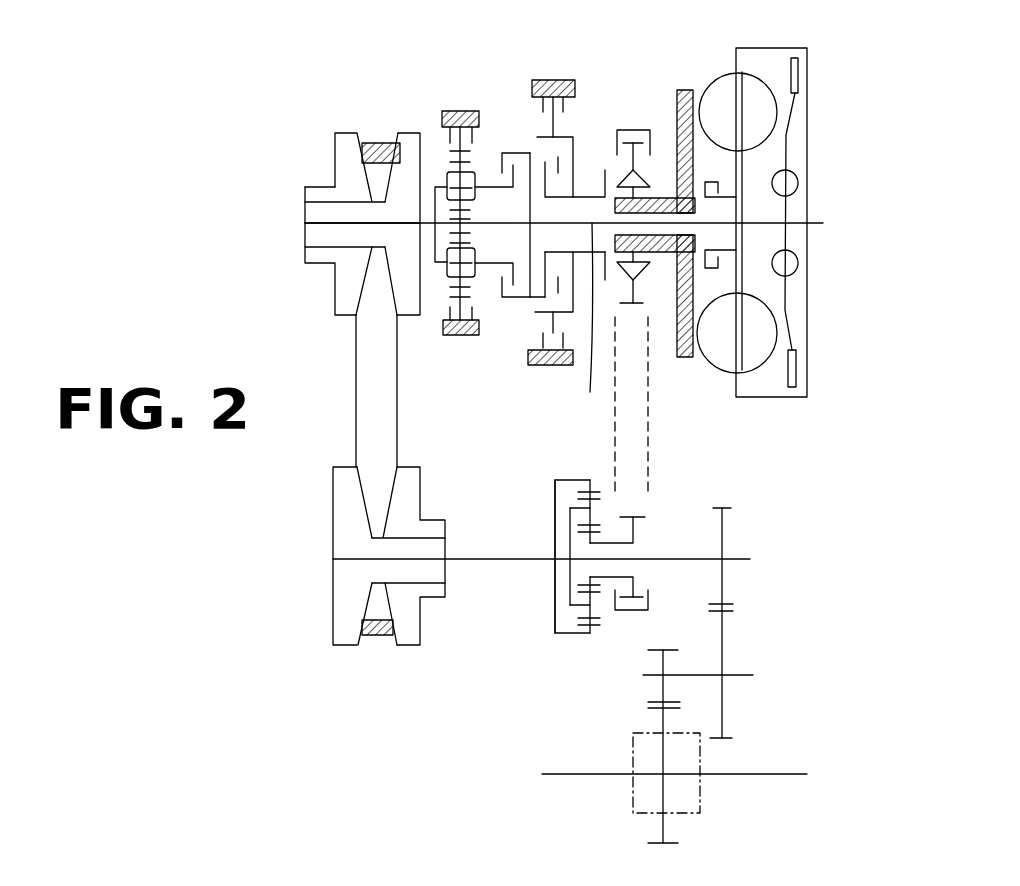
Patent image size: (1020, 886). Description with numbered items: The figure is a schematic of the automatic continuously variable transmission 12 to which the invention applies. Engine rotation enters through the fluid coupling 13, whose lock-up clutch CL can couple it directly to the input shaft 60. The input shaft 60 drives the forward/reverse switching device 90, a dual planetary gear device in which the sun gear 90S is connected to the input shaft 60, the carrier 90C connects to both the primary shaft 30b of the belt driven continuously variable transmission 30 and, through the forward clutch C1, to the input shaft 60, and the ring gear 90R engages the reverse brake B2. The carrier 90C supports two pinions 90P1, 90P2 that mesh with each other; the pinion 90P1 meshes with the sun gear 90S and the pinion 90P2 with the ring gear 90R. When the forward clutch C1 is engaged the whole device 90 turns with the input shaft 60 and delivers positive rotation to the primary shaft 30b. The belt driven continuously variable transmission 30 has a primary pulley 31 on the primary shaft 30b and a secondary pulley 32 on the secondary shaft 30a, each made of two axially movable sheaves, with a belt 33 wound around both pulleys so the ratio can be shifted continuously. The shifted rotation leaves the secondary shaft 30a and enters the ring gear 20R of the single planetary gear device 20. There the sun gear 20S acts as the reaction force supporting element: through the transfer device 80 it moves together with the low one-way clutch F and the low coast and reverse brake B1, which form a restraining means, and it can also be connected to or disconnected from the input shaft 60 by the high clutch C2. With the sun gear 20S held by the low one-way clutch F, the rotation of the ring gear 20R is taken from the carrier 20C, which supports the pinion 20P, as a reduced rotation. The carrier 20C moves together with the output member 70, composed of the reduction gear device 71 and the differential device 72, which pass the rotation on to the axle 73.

The automatic continuously variable transmission 12 is at (358, 57).
The fluid coupling 13 is at (728, 45).
The lock-up clutch CL is at (791, 202).
The belt driven continuously variable transmission 30 is at (367, 127).
The primary pulley 31 is at (338, 155).
The primary shaft 30b is at (335, 227).
The secondary shaft 30a is at (468, 560).
The secondary pulley 32 is at (338, 610).
The belt 33 is at (372, 645).
The forward/reverse switching device 90 is at (425, 130).
The ring gear 90R is at (453, 148).
The pinion 90P1 is at (440, 272).
The pinion 90P2 is at (453, 164).
The carrier 90C is at (434, 262).
The sun gear 90S is at (468, 232).
The low coast & reverse brake B1 is at (551, 209).
The reverse brake B2 is at (459, 114).
The forward clutch C1 is at (521, 210).
The high clutch C2 is at (565, 155).
The low one-way clutch F is at (655, 223).
The input shaft 60 is at (593, 323).
The transfer device 80 is at (657, 423).
The single planetary gear device 20 is at (532, 497).
The carrier 20C is at (567, 537).
The sun gear 20S is at (620, 543).
The pinion 20P is at (588, 600).
The ring gear 20R is at (568, 634).
The output member 70 is at (733, 663).
The reduction gear device 71 is at (735, 618).
The differential device 72 is at (700, 763).
The axle 73 is at (568, 772).